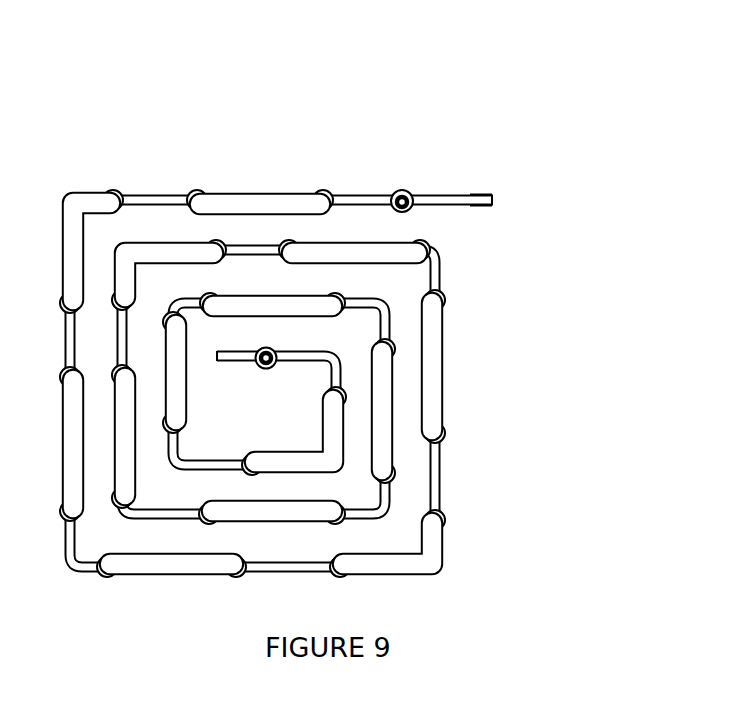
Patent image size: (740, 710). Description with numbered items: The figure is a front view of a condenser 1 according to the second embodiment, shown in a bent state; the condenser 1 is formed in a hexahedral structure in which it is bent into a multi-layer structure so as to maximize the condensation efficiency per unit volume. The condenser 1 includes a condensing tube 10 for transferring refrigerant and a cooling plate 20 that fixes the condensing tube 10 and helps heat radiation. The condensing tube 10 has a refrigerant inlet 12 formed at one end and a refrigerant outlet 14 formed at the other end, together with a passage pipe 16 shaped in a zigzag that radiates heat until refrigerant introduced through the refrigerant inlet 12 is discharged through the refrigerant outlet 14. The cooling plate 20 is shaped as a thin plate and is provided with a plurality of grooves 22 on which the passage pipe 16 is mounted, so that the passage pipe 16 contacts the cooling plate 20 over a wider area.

The condenser 1 is at (336, 295).
The condensing tube 10 is at (203, 188).
The refrigerant inlet 12 is at (275, 364).
The refrigerant outlet 14 is at (398, 190).
The passage pipe 16 is at (270, 203).
The cooling plate 20 is at (473, 208).
The grooves 22 is at (310, 192).